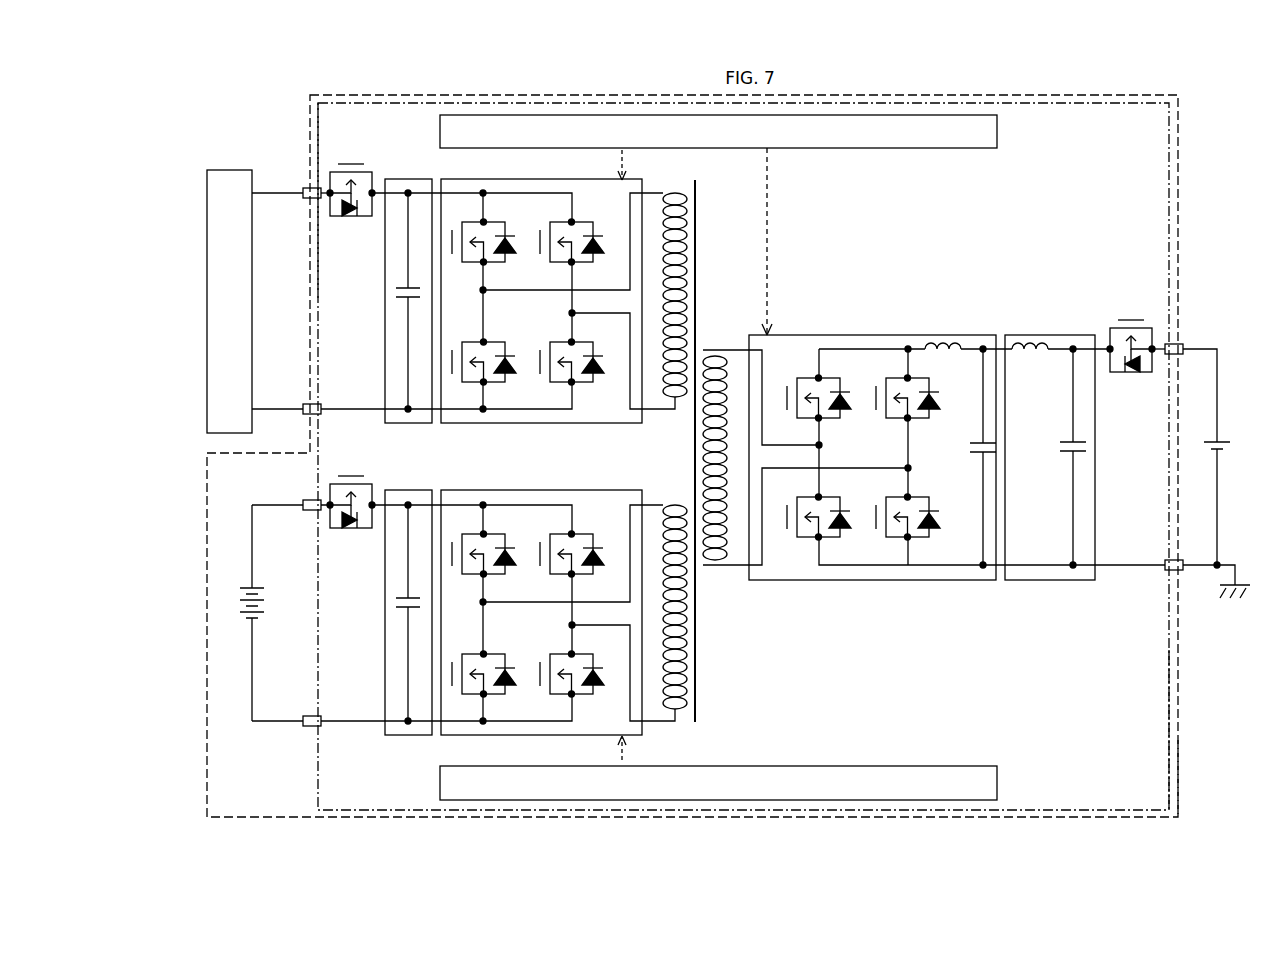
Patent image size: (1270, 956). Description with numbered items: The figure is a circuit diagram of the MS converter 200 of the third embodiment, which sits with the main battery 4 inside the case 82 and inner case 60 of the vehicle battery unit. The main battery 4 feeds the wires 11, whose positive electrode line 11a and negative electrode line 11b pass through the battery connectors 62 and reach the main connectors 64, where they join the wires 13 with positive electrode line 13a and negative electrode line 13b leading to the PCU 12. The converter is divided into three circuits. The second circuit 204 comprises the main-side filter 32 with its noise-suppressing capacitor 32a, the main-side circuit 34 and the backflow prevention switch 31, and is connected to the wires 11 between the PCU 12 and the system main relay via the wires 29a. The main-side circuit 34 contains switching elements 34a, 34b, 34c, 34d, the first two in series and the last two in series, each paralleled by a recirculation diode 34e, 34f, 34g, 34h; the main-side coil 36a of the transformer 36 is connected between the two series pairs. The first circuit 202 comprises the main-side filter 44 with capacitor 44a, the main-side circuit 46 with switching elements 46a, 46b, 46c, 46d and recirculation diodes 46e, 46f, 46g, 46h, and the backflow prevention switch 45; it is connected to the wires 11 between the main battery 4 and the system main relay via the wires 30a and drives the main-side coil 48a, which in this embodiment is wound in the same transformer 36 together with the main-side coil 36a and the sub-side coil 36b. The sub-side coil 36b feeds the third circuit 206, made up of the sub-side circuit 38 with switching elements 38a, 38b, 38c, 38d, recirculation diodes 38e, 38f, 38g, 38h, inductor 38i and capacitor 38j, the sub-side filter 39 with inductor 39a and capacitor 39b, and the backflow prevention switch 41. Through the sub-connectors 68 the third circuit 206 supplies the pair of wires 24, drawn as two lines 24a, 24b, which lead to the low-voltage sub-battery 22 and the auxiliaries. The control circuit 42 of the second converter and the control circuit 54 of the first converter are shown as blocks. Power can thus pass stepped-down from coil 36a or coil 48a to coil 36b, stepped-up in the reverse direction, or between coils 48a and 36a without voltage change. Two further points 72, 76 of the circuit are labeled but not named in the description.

The MS converter 200 is at (1185, 124).
The first circuit 202 is at (390, 758).
The second circuit 204 is at (328, 160).
The third circuit 206 is at (968, 290).
The PCU 12 is at (212, 170).
The wires 13 is at (266, 251).
The positive electrode line 13a is at (262, 193).
The negative electrode line 13b is at (285, 409).
The main connectors 64 is at (310, 186).
The wires 29a is at (330, 200).
The backflow prevention switch 31 is at (352, 162).
The main-side filter 32 is at (424, 280).
The capacitor 32a is at (397, 285).
The main-side circuit 34 is at (525, 304).
The switching element 34a is at (452, 236).
The switching element 34b is at (452, 365).
The switching element 34c is at (540, 236).
The switching element 34d is at (540, 365).
The recirculation diode 34e is at (505, 226).
The recirculation diode 34f is at (505, 372).
The recirculation diode 34g is at (593, 226).
The recirculation diode 34h is at (593, 372).
The connection conductor 72 is at (642, 183).
The transformer 36 is at (784, 435).
The main-side coil 36a is at (676, 196).
The sub-side coil 36b is at (726, 356).
The control circuit 42 is at (998, 131).
The control circuit 54 is at (998, 783).
The sub-side circuit 38 is at (884, 459).
The switching element 38a is at (780, 400).
The switching element 38b is at (780, 520).
The switching element 38c is at (870, 400).
The switching element 38d is at (870, 520).
The recirculation diode 38e is at (843, 385).
The recirculation diode 38f is at (848, 530).
The recirculation diode 38g is at (933, 385).
The recirculation diode 38h is at (935, 530).
The inductor 38i is at (946, 343).
The capacitor 38j is at (975, 440).
The sub-side filter 39 is at (1074, 442).
The inductor 39a is at (1030, 345).
The capacitor 39b is at (1070, 440).
The backflow prevention switch 41 is at (1130, 318).
The sub-connectors 68 is at (1168, 342).
The wires 24 is at (1215, 419).
The second power line positive conductor 24a is at (1208, 440).
The second power line negative conductor 24b is at (1208, 560).
The sub-battery 22 is at (1225, 440).
The main battery 4 is at (248, 586).
The wires 11 is at (269, 659).
The positive electrode line 11a is at (258, 520).
The negative electrode line 11b is at (276, 600).
The battery connectors 62 is at (304, 500).
The wires 30a is at (332, 515).
The backflow prevention switch 45 is at (360, 473).
The main-side filter 44 is at (427, 588).
The capacitor 44a is at (397, 596).
The main-side circuit 46 is at (525, 605).
The switching element 46a is at (452, 548).
The switching element 46b is at (452, 680).
The switching element 46c is at (540, 548).
The switching element 46d is at (540, 680).
The recirculation diode 46e is at (506, 540).
The recirculation diode 46f is at (505, 684).
The recirculation diode 46g is at (594, 540).
The recirculation diode 46h is at (593, 684).
The connection conductor 76 is at (648, 735).
The main-side coil 48a is at (672, 520).
The inner case 60 is at (1172, 718).
The case 82 is at (1180, 753).